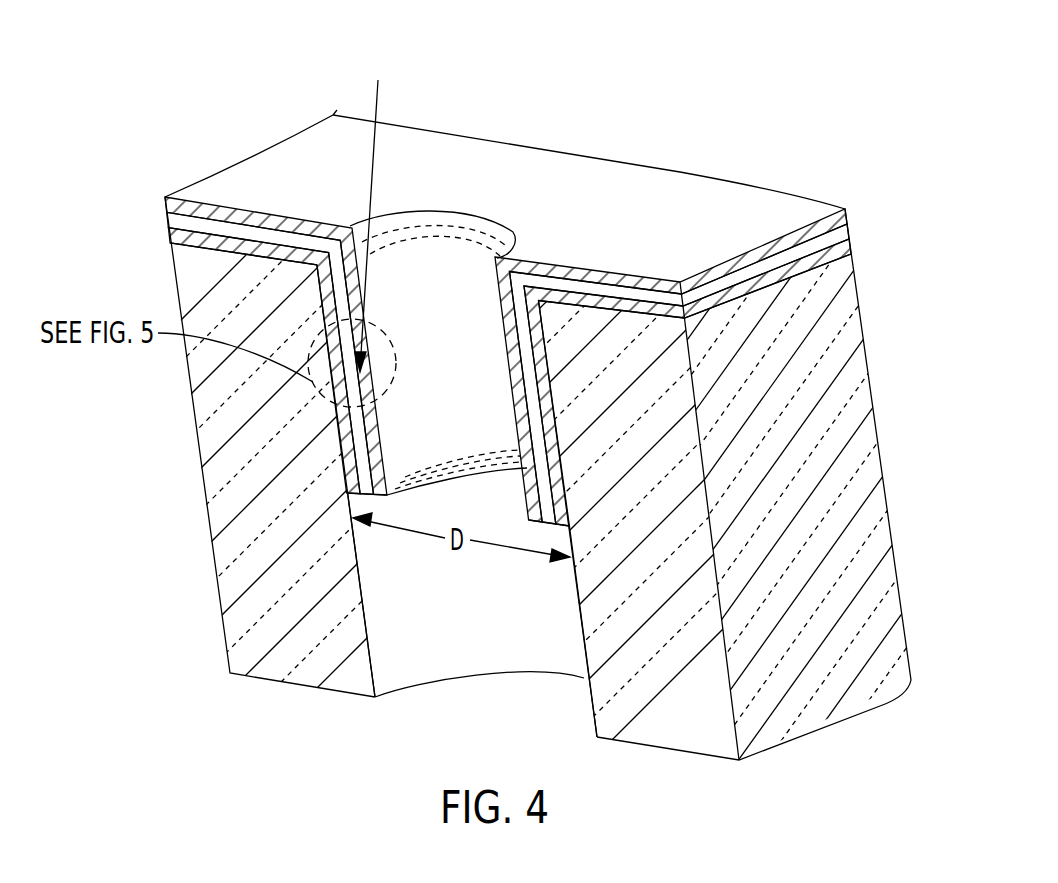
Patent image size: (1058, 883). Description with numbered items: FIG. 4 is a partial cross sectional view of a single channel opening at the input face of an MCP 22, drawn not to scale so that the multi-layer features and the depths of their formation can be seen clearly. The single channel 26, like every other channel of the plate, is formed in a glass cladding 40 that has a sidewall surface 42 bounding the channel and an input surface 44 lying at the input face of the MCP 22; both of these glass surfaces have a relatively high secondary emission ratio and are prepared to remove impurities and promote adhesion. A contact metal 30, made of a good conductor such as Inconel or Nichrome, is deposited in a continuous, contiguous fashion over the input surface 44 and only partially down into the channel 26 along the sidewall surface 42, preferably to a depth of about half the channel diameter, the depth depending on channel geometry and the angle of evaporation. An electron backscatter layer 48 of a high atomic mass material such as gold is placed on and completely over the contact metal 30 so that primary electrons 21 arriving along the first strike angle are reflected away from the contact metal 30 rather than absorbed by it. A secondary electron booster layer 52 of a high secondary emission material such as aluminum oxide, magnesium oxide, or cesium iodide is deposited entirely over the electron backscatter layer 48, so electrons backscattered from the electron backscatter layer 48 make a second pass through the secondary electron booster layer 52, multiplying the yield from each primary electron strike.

The primary electrons 21 is at (380, 108).
The MCP 22 is at (722, 134).
The channel 26 is at (562, 588).
The contact metal 30 is at (222, 240).
The glass cladding 40 is at (212, 442).
The sidewall surface 42 is at (363, 593).
The input surface 44 is at (200, 257).
The electron backscatter layer 48 is at (250, 232).
The secondary electron booster layer 52 is at (278, 225).